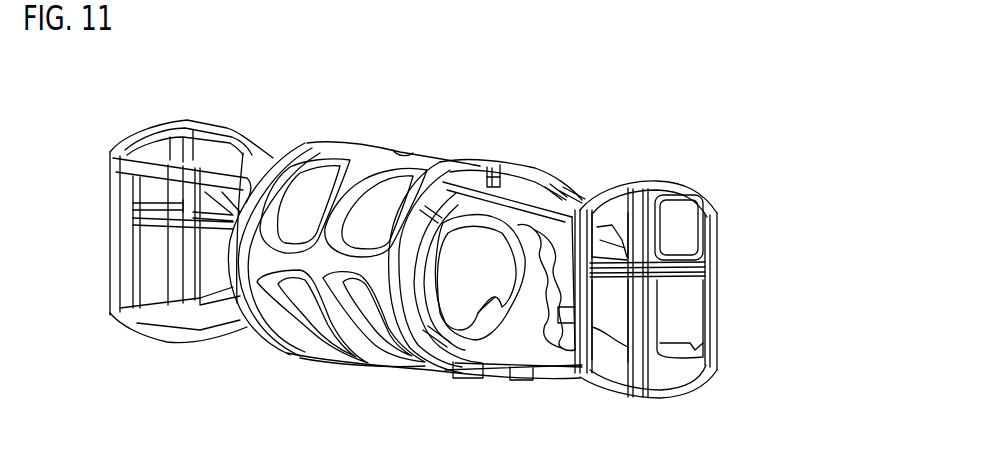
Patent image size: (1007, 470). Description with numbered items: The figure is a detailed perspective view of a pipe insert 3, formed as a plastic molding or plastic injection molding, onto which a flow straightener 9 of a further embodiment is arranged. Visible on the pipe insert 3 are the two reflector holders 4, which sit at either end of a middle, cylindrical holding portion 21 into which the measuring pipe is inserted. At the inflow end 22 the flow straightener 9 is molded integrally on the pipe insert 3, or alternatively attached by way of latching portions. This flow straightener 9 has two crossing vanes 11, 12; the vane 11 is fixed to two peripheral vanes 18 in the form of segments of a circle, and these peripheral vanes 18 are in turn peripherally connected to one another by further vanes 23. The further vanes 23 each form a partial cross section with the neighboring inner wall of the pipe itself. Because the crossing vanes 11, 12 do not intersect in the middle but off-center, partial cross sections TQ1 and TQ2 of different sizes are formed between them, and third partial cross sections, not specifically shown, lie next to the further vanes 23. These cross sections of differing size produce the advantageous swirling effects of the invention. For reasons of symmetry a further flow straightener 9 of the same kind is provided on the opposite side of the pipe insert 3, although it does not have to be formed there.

The pipe insert 3 is at (502, 157).
The reflector holders 4 is at (234, 185).
The flow straightener 9 is at (162, 112).
The vane 11 is at (678, 275).
The vane 12 is at (660, 333).
The peripheral vanes 18 is at (597, 203).
The cylindrical holding portion 21 is at (380, 272).
The inflow end 22 is at (663, 169).
The further vanes 23 is at (712, 243).
The partial cross section TQ1 is at (728, 163).
The partial cross section TQ2 is at (673, 312).